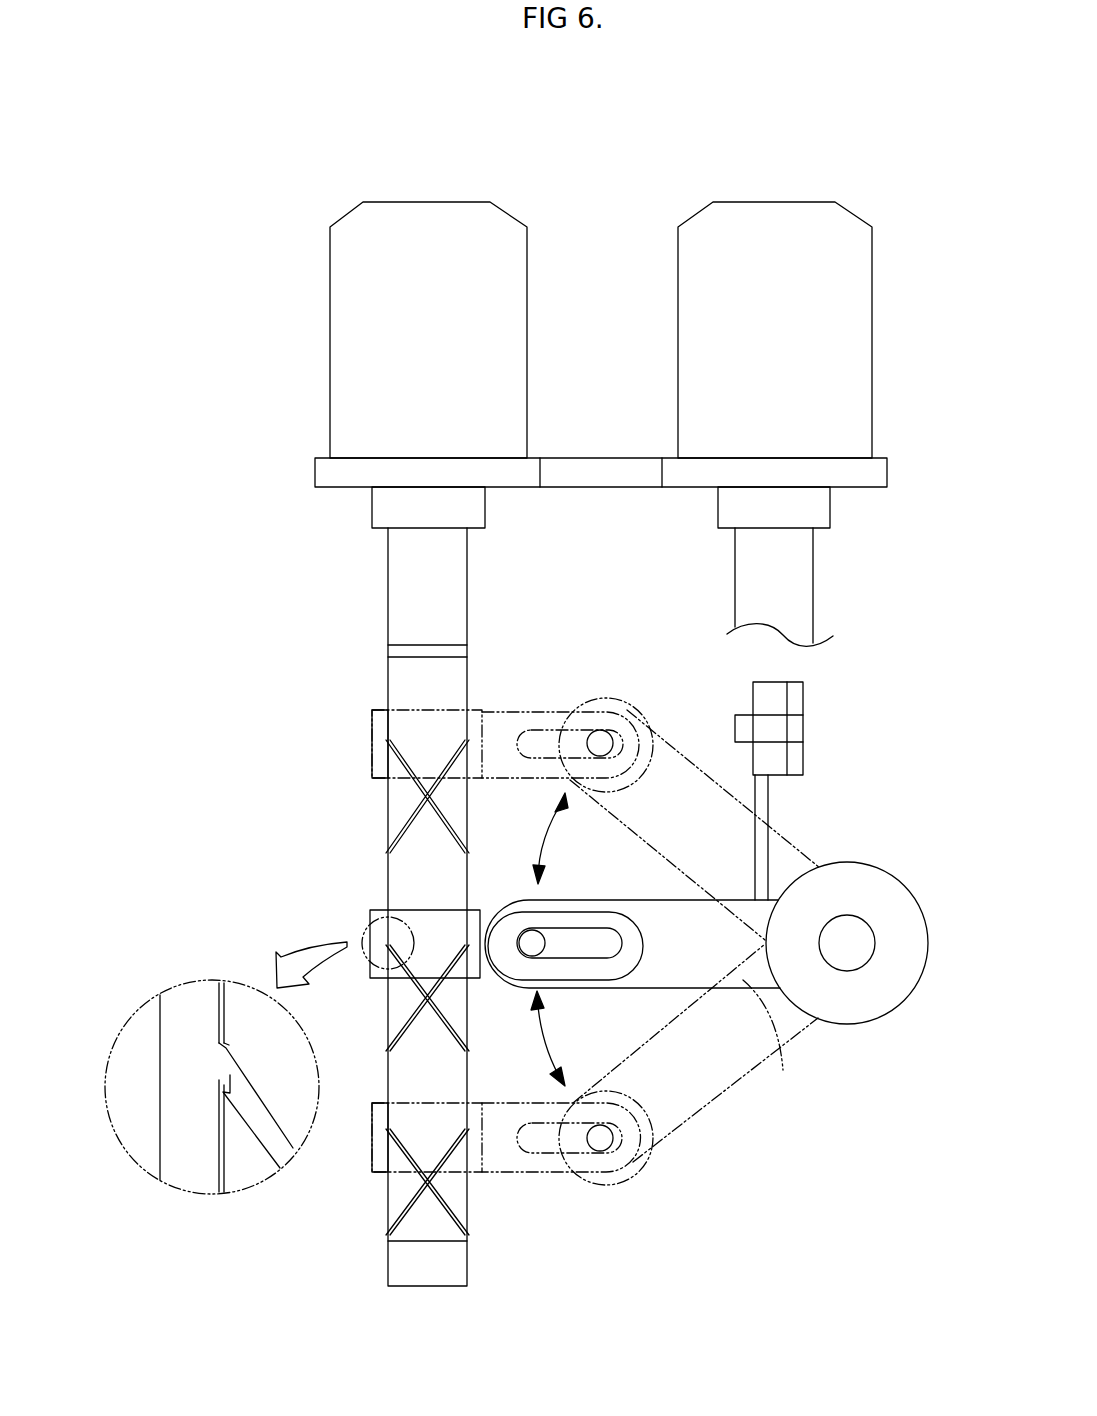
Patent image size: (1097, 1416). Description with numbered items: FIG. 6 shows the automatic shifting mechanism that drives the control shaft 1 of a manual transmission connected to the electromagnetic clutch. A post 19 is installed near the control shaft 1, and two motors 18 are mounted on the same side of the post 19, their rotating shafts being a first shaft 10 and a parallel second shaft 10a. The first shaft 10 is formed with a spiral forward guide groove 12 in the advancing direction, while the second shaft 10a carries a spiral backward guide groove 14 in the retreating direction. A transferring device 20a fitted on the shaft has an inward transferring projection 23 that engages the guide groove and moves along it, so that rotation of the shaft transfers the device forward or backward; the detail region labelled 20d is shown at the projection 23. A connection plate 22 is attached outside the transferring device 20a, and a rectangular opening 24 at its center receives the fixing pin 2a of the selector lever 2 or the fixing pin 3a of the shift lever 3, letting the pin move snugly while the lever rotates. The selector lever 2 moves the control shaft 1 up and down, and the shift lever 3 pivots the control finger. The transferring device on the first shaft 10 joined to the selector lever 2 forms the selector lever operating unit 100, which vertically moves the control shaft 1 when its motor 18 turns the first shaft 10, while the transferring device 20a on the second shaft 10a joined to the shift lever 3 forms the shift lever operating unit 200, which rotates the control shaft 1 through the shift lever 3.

The shift lever operating unit 200 is at (352, 172).
The selector lever operating unit 100 is at (735, 172).
The motor 18 is at (495, 293).
The post 19 is at (318, 468).
The second shaft 10a is at (407, 565).
The first shaft 10 is at (810, 580).
The connection plate 22 is at (490, 720).
The rectangular opening 24 is at (543, 737).
The forward guide groove 12 is at (380, 750).
The backward guide groove 14 is at (387, 840).
The transferring device 20a is at (368, 917).
The fixing pin 2a is at (777, 722).
The selector lever 2 is at (795, 758).
The fixing pin 3a is at (530, 938).
The control shaft 1 is at (862, 947).
The shift lever 3 is at (748, 1057).
The transferring projection 23 is at (225, 1068).
The guide edge 20d is at (176, 1063).